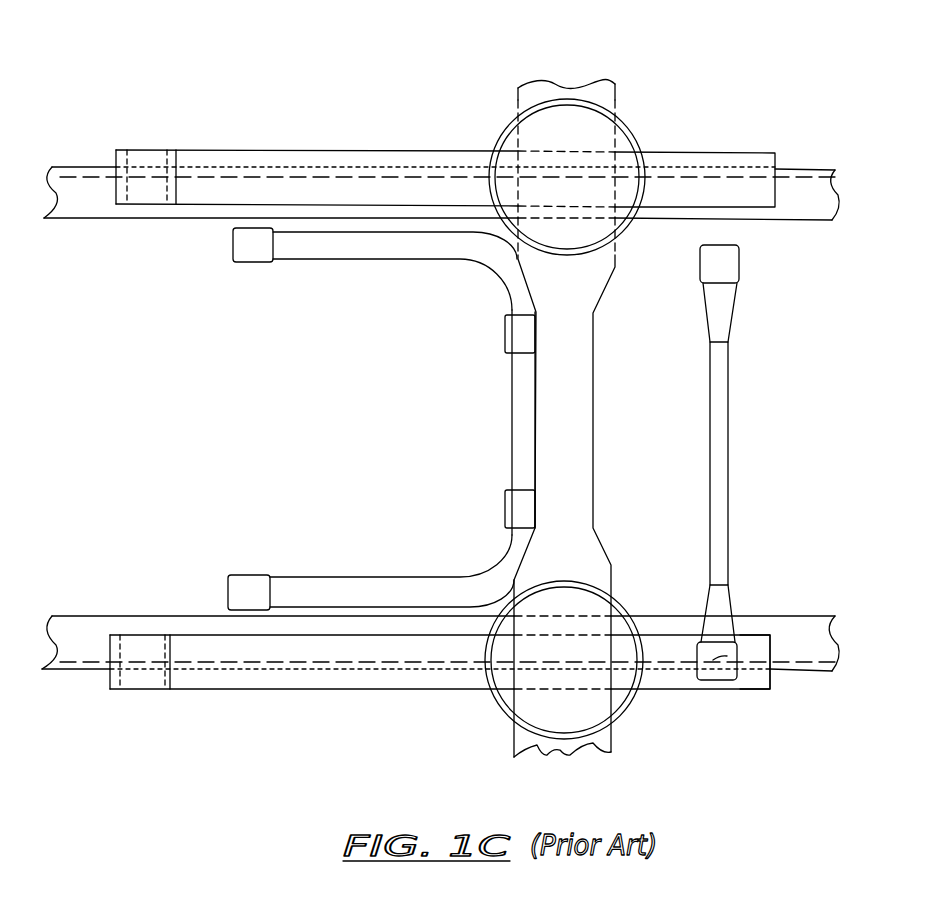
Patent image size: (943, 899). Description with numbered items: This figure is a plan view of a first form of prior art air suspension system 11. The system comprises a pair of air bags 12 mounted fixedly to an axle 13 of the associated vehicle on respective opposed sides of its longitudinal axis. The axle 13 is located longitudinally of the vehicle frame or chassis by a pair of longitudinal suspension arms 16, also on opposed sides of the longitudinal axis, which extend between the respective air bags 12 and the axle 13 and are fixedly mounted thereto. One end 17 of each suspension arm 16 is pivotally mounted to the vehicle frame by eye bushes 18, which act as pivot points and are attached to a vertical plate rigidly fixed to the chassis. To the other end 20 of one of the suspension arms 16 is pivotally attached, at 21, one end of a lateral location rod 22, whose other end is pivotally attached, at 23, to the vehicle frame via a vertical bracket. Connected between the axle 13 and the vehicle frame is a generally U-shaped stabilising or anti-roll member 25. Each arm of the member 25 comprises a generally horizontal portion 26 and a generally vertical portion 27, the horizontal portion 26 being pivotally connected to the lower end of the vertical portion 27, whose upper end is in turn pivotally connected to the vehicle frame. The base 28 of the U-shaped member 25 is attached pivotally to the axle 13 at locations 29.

The air suspension system 11 is at (370, 114).
The air bag 12 is at (518, 118).
The axle 13 is at (572, 407).
The longitudinal suspension arm 16 is at (203, 195).
The one end of suspension arm 17 is at (174, 158).
The eye bush 18 is at (157, 158).
The other end of suspension arm 20 is at (760, 683).
The pivotal attachment of location rod to arm 21 is at (743, 640).
The lateral location rod 22 is at (720, 416).
The pivotal attachment of location rod to frame 23 is at (728, 272).
The U-shaped stabilising member 25 is at (341, 419).
The generally horizontal portion 26 is at (306, 252).
The generally vertical portion 27 is at (240, 247).
The base of U-shaped member 28 is at (512, 405).
The pivotal attachment locations of base to axle 29 is at (508, 332).